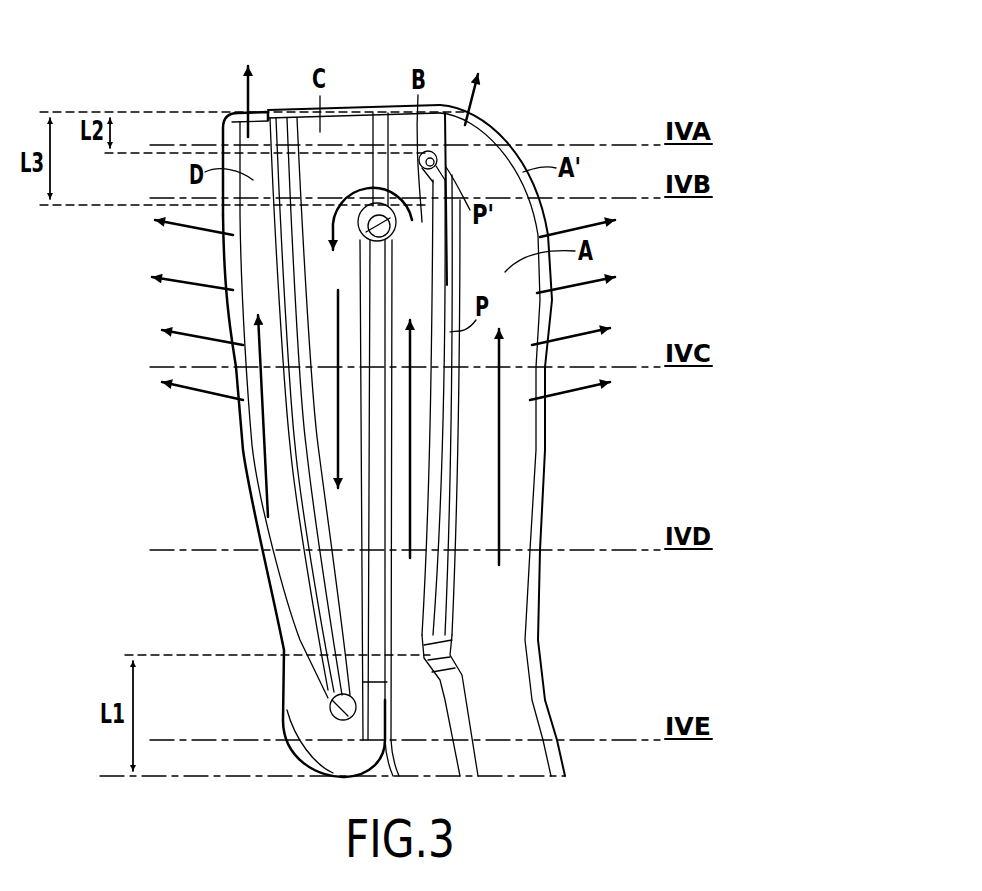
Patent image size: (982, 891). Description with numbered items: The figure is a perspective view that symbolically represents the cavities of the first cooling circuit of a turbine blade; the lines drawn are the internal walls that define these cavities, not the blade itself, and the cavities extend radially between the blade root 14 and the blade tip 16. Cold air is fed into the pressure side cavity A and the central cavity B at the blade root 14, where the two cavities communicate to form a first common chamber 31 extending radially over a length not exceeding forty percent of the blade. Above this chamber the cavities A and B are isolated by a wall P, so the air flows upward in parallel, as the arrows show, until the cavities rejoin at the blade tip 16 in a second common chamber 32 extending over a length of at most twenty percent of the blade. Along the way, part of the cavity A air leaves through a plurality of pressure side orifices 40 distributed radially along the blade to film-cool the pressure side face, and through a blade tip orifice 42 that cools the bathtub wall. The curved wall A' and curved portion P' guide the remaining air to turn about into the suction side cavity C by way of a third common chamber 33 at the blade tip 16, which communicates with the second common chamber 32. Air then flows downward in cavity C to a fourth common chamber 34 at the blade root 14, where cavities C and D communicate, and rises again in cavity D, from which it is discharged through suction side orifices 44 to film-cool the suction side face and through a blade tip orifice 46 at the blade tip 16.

The blade root 14 is at (505, 785).
The blade tip 16 is at (386, 89).
The first common chamber 31 is at (470, 710).
The second common chamber 32 is at (445, 147).
The third common chamber 33 is at (330, 163).
The fourth common chamber 34 is at (332, 727).
The pressure side orifices 40 is at (573, 285).
The blade tip orifice 42 is at (477, 104).
The suction side orifices 44 is at (193, 285).
The blade tip orifice 46 is at (247, 110).